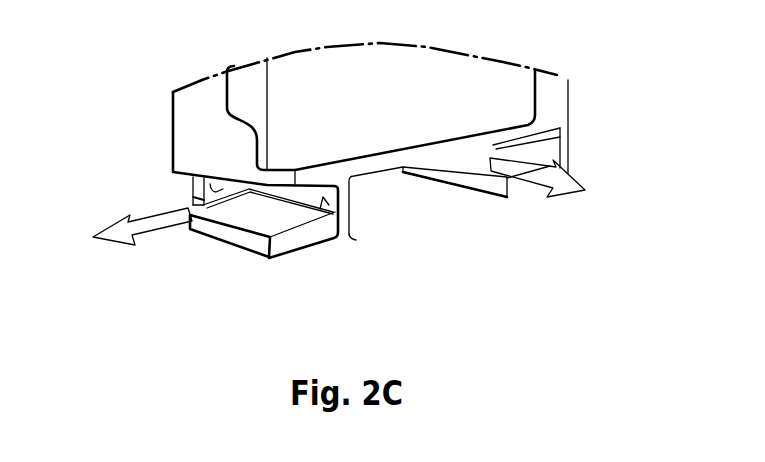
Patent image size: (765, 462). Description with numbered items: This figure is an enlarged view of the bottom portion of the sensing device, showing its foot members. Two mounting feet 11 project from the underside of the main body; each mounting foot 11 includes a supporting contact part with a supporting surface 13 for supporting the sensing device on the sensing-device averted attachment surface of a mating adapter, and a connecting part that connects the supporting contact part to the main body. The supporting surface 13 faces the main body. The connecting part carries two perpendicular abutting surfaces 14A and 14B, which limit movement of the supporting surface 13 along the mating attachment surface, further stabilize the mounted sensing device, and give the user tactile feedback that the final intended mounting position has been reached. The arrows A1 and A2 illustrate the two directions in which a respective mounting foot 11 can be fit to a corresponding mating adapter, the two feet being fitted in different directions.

The mounting foot 11 is at (388, 269).
The supporting surface 13 is at (261, 208).
The abutting surface 14A is at (188, 203).
The abutting surface 14B is at (330, 207).
The fitting direction arrow A1 is at (128, 242).
The fitting direction arrow A2 is at (580, 183).